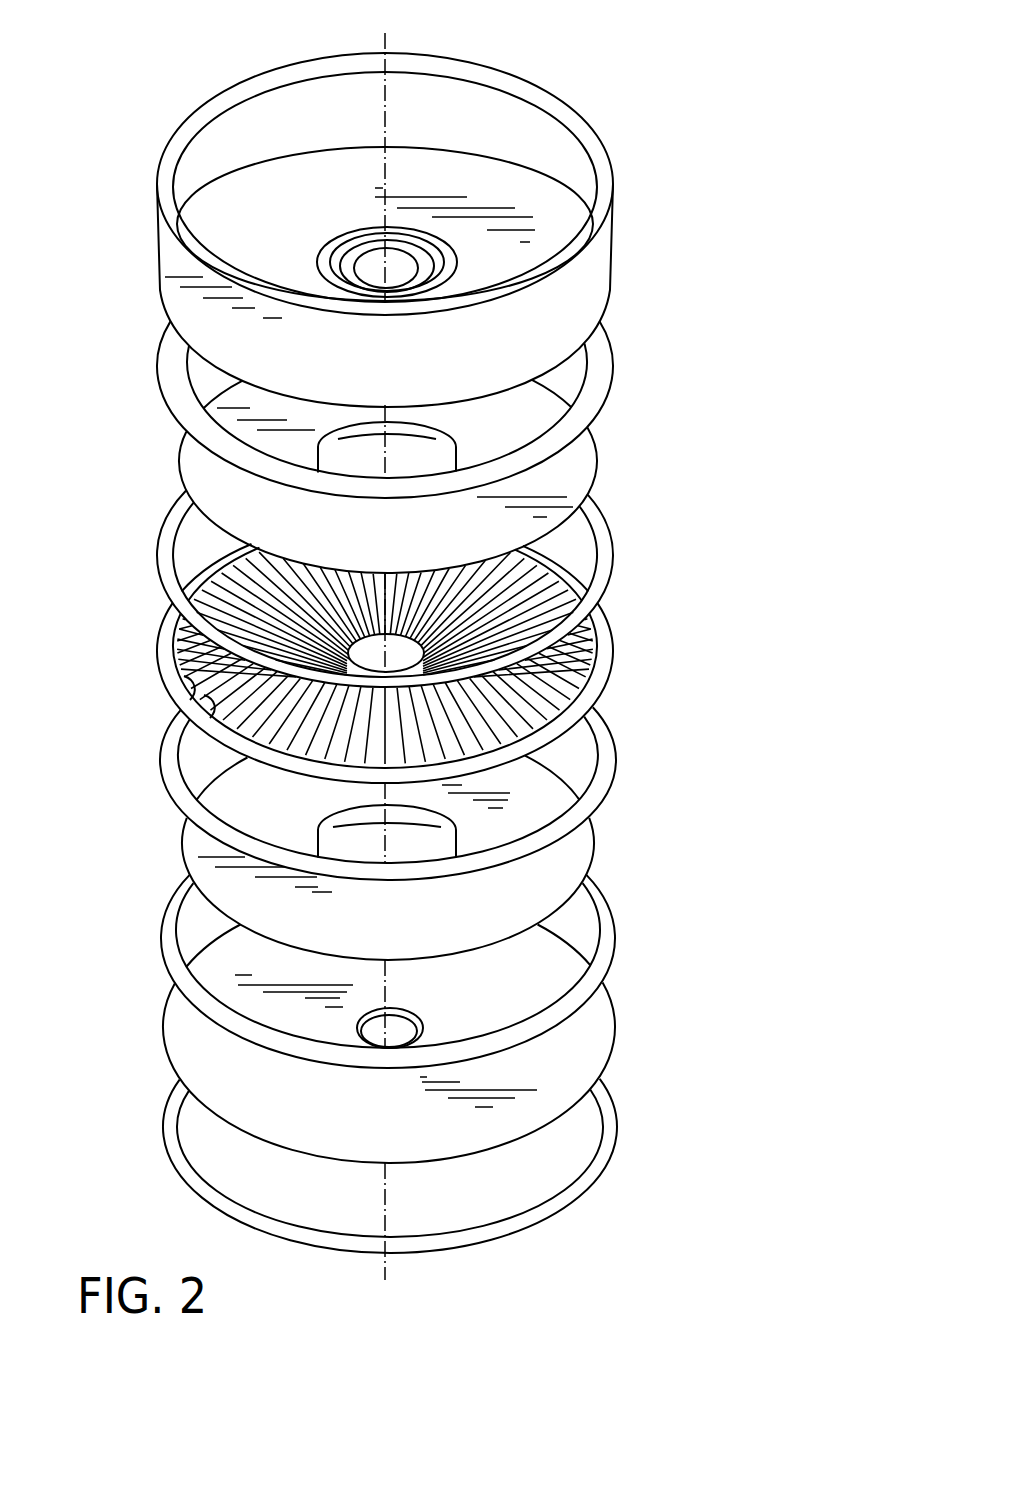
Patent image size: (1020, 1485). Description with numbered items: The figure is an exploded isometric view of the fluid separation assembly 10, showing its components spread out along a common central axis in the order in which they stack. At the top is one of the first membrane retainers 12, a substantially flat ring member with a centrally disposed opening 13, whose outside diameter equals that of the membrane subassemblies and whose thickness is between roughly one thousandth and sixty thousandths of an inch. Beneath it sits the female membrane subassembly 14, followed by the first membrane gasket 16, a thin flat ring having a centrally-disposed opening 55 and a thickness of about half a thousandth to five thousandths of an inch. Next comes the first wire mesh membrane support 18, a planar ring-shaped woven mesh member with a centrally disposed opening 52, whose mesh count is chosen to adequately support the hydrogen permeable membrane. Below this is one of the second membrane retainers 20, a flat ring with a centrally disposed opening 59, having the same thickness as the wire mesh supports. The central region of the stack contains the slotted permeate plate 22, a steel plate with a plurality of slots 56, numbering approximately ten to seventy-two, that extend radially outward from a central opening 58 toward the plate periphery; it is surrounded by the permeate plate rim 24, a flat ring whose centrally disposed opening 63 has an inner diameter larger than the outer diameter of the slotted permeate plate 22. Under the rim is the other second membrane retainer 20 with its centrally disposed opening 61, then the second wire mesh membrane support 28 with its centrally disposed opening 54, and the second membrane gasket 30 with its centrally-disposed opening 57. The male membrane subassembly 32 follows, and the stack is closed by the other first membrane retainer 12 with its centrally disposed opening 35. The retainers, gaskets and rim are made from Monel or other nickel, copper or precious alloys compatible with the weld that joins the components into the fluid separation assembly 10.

The fluid separation assembly 10 is at (145, 130).
The first membrane retainers 12 is at (603, 185).
The centrally disposed opening 13 is at (495, 122).
The female membrane subassembly 14 is at (562, 300).
The first membrane gasket 16 is at (585, 412).
The first wire mesh membrane support 18 is at (573, 472).
The second membrane retainers 20 is at (607, 578).
The slotted permeate plate 22 is at (535, 689).
The permeate plate rim 24 is at (560, 733).
The second wire mesh membrane support 28 is at (562, 867).
The second membrane gasket 30 is at (607, 957).
The male membrane subassembly 32 is at (593, 1028).
The centrally disposed opening 35 is at (550, 1168).
The centrally disposed opening 52 is at (332, 462).
The centrally disposed opening 54 is at (343, 847).
The centrally-disposed opening 55 is at (575, 378).
The slots 56 is at (210, 704).
The centrally-disposed opening 57 is at (574, 923).
The central opening 58 is at (250, 608).
The centrally disposed opening 59 is at (575, 550).
The centrally disposed opening 61 is at (572, 764).
The centrally disposed opening 63 is at (580, 636).